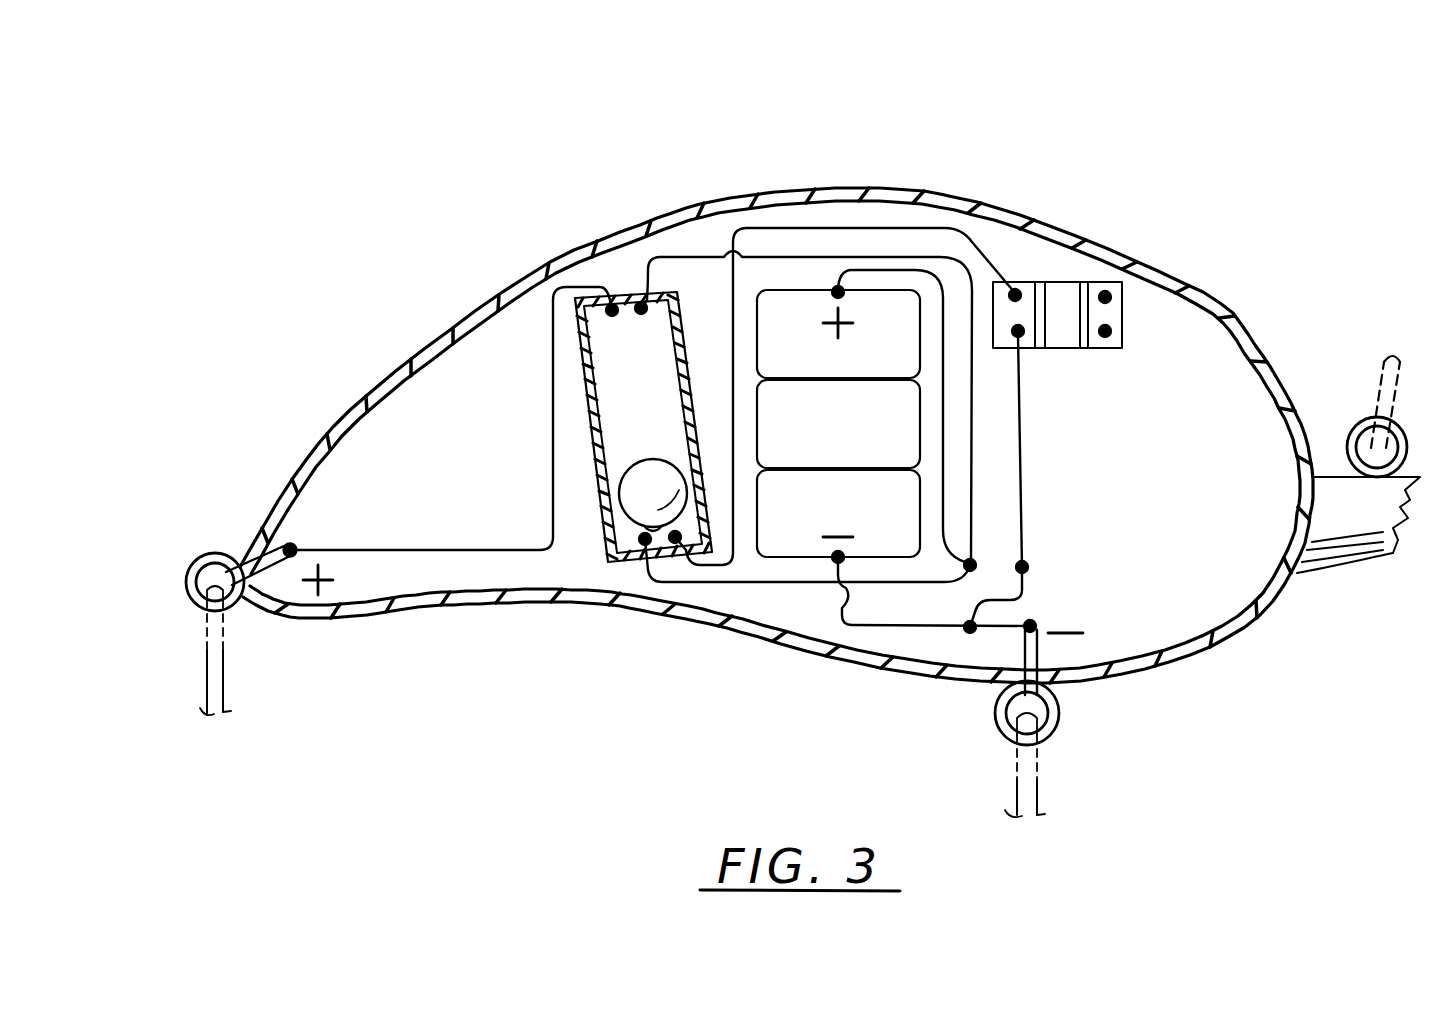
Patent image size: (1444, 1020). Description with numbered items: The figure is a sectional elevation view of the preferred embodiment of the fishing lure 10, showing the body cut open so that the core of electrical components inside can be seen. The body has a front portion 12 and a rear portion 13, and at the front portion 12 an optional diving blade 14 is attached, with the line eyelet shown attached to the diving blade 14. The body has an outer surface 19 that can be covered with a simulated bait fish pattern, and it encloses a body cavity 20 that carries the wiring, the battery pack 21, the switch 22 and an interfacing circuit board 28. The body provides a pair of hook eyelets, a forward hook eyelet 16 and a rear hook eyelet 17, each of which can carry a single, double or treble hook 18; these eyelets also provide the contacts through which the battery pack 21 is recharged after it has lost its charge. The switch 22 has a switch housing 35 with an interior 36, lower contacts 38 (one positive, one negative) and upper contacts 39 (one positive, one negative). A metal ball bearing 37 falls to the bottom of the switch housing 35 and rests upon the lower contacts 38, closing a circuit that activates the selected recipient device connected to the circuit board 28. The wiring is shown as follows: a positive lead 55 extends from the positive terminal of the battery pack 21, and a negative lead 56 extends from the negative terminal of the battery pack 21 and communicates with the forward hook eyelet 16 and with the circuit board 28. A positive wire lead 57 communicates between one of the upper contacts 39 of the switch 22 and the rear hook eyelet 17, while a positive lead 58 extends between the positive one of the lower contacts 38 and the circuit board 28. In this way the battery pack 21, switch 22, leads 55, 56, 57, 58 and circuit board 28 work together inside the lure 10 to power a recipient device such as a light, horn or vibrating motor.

The fishing lure 10 is at (1050, 130).
The front portion 12 is at (1297, 390).
The rear portion 13 is at (318, 443).
The diving blade 14 is at (1343, 570).
The forward hook eyelet 16 is at (1060, 718).
The rear hook eyelet 17 is at (207, 557).
The hook 18 is at (228, 652).
The outer surface 19 is at (472, 306).
The body cavity 20 is at (484, 376).
The battery pack 21 is at (858, 438).
The switch 22 is at (592, 558).
The circuit board 28 is at (1065, 280).
The switch housing 35 is at (680, 345).
The interior 36 is at (634, 318).
The metal ball bearing 37 is at (653, 473).
The lower contacts 38 is at (628, 560).
The upper contacts 39 is at (640, 305).
The positive lead 55 is at (845, 285).
The negative lead 56 is at (1030, 492).
The positive wire lead 57 is at (472, 548).
The positive lead 58 is at (823, 226).